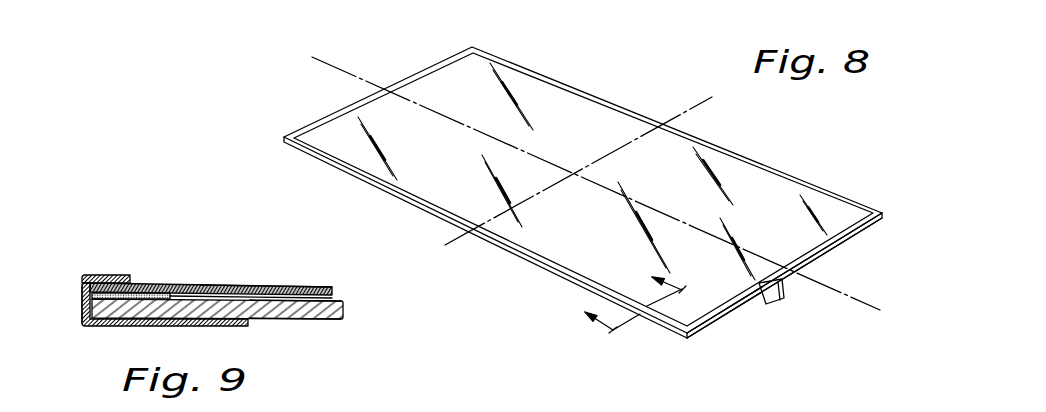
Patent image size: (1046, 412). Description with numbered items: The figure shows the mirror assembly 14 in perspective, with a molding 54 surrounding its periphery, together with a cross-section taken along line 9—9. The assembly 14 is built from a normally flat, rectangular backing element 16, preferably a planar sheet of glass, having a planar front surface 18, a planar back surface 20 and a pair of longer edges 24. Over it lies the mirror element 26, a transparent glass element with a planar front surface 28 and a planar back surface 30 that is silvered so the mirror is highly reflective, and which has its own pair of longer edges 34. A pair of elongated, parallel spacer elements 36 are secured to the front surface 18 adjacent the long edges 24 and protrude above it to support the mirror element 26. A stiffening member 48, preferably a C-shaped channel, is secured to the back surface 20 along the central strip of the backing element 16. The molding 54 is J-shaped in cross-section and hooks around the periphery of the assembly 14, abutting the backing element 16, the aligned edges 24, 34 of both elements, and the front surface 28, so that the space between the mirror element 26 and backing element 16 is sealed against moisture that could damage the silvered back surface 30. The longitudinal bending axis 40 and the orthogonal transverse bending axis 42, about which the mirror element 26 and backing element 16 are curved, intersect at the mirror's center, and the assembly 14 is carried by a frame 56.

In FIG. 8, the mirror assembly 14 is at (583, 194).
In FIG. 8, the mirror element 26 is at (607, 123).
In FIG. 9, the mirror element 26 is at (318, 286).
In FIG. 8, the transverse bending axis 42 is at (696, 108).
In FIG. 8, the longitudinal bending axis 40 is at (863, 302).
In FIG. 8, the stiffening member 48 is at (783, 294).
In FIG. 8, the frame 56 is at (707, 321).
In FIG. 8, the section line 9— 9 is at (643, 316).
In FIG. 9, the longer edges of backing element 24 is at (82, 310).
In FIG. 9, the longer edges of mirror element 34 is at (77, 288).
In FIG. 9, the molding 54 is at (108, 275).
In FIG. 9, the front surface of mirror element 28 is at (250, 287).
In FIG. 9, the spacer elements 36 is at (160, 285).
In FIG. 9, the backing element 16 is at (343, 308).
In FIG. 9, the back surface of mirror element 30 is at (337, 299).
In FIG. 9, the front surface of backing element 18 is at (287, 319).
In FIG. 9, the back surface of backing element 20 is at (305, 297).